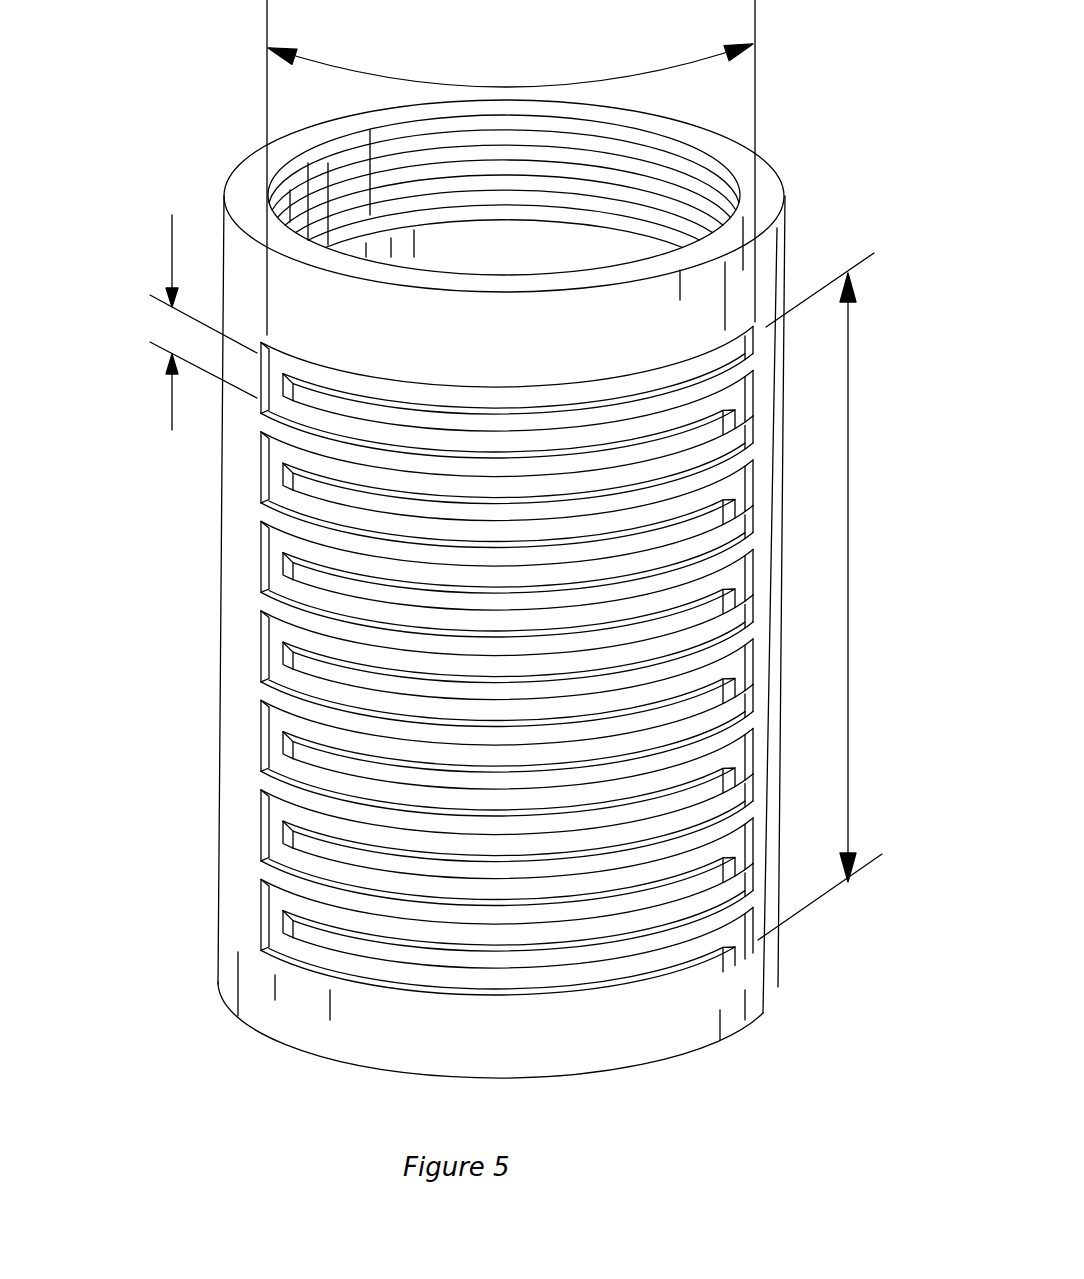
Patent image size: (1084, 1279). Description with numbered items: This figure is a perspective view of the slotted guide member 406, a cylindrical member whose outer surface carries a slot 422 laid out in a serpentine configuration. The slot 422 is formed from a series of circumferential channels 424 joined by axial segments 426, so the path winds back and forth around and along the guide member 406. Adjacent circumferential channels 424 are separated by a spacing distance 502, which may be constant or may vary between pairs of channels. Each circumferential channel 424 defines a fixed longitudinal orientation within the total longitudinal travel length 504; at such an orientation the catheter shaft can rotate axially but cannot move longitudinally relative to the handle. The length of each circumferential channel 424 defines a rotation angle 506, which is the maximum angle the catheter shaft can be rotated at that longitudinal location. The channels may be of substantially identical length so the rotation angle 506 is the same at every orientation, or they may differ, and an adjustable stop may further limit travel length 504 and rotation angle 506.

The slotted guide member 406 is at (778, 988).
The slot 422 is at (406, 661).
The circumferential channels 424 is at (337, 606).
The axial segments 426 is at (256, 908).
The spacing distance 502 is at (172, 430).
The total longitudinal travel length 504 is at (861, 375).
The rotation angle 506 is at (350, 72).